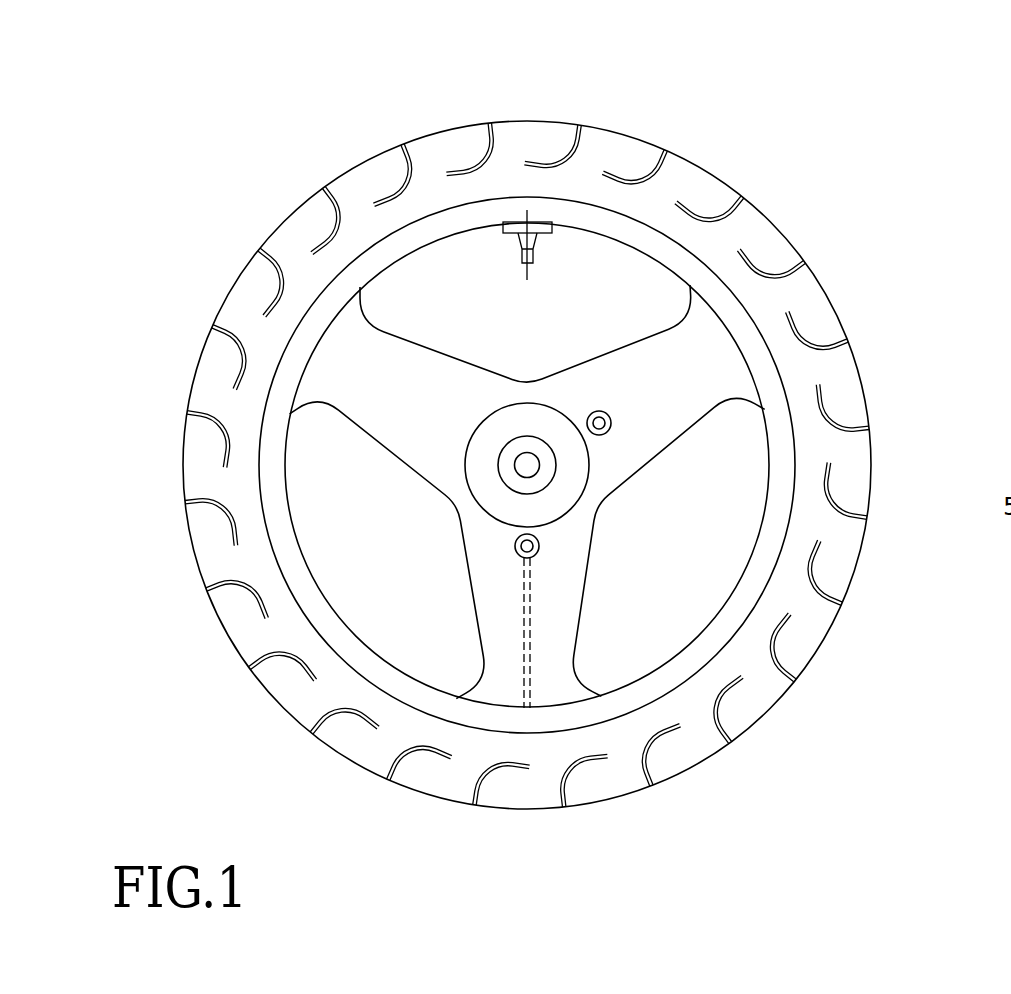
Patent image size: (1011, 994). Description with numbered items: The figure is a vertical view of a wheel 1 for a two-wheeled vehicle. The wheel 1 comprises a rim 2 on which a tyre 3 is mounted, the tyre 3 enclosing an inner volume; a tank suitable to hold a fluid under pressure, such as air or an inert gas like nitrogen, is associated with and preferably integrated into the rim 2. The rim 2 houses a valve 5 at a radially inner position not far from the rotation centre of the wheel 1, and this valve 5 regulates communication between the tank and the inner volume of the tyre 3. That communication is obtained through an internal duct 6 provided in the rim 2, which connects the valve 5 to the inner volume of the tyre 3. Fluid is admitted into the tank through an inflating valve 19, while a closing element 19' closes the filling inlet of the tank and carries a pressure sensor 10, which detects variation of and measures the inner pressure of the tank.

The wheel 1 is at (188, 167).
The rim 2 is at (780, 508).
The tyre 3 is at (837, 300).
The valve 5 is at (538, 546).
The internal duct 6 is at (533, 668).
The pressure sensor 10 is at (611, 426).
The inflating valve 19 is at (745, 292).
The closing element 19' is at (707, 263).